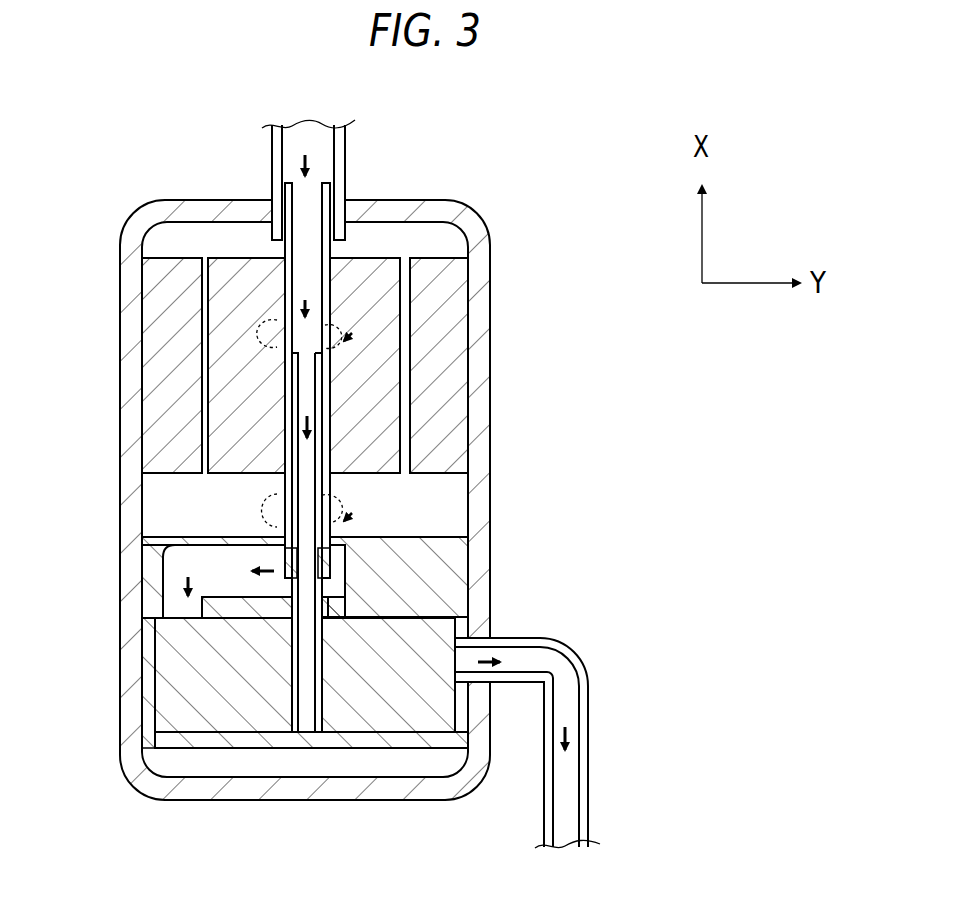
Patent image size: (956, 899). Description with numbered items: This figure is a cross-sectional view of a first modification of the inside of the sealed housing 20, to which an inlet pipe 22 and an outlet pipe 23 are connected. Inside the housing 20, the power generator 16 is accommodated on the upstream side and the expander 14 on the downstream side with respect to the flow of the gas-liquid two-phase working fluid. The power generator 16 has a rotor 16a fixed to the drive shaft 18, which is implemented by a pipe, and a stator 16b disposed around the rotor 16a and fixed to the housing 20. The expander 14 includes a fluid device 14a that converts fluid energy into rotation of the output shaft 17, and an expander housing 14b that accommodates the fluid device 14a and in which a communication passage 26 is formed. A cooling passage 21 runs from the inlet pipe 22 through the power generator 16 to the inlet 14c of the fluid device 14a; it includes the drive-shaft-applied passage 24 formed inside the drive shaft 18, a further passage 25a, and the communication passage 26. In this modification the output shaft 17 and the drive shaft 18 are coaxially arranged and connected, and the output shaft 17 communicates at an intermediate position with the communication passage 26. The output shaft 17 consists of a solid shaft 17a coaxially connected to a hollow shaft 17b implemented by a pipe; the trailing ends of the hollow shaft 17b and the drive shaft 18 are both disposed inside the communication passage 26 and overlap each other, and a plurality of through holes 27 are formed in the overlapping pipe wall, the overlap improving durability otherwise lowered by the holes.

The expander 14 is at (258, 669).
The fluid device 14a is at (150, 648).
The expander housing 14b is at (140, 687).
The inlet 14c is at (175, 604).
The power generator 16 is at (258, 365).
The rotor 16a is at (215, 386).
The stator 16b is at (150, 298).
The output shaft 17 is at (311, 542).
The solid shaft 17a is at (455, 612).
The hollow shaft 17b is at (300, 440).
The drive shaft 18 is at (300, 426).
The housing 20 is at (478, 218).
The cooling passage 21 is at (330, 283).
The inlet pipe 22 is at (348, 172).
The outlet pipe 23 is at (597, 690).
The drive-shaft-applied passage 24 is at (350, 342).
The flow passage opening 25a is at (350, 522).
The communication passage 26 is at (190, 556).
The through holes 27 is at (340, 580).